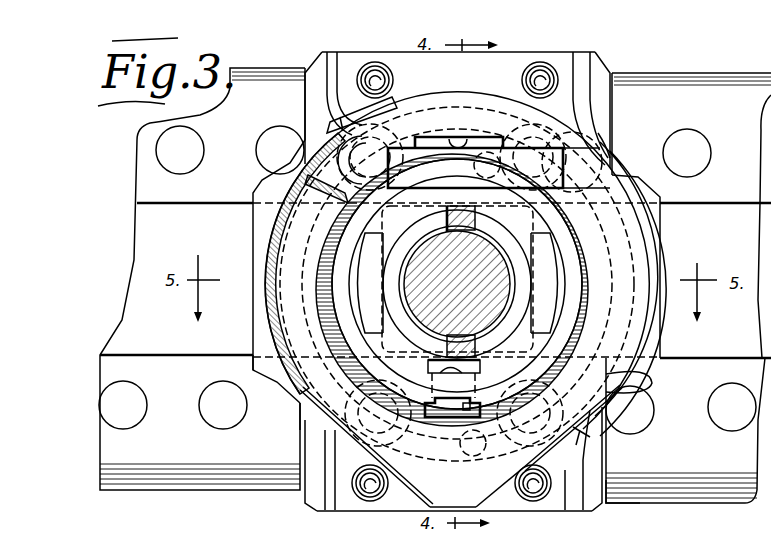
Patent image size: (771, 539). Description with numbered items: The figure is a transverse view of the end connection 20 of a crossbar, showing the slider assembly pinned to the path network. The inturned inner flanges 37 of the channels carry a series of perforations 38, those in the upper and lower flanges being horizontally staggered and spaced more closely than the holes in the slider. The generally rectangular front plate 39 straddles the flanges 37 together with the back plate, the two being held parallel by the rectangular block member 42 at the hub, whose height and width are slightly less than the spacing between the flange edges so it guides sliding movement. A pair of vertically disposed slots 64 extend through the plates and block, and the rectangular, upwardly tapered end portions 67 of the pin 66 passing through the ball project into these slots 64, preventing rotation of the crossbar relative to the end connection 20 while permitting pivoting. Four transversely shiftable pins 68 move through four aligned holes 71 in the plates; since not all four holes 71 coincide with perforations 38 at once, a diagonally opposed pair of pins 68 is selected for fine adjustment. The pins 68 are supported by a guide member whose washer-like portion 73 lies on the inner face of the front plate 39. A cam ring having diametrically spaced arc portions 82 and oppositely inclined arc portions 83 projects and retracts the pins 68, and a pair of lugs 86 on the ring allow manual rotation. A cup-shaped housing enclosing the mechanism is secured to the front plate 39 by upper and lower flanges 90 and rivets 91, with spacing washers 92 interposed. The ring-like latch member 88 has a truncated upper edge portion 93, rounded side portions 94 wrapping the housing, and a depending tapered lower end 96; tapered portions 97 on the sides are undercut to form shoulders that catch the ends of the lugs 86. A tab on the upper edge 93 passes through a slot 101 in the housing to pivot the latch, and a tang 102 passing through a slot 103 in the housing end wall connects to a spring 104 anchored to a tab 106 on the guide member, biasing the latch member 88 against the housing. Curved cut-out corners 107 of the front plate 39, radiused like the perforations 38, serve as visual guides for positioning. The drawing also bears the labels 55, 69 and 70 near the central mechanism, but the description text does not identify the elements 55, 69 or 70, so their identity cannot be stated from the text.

The end connection 20 is at (290, 410).
The inner flanges 37 is at (717, 353).
The perforations 38 is at (190, 158).
The front plate 39 is at (602, 504).
The block member 42 is at (336, 203).
The bottom boss edge 55 is at (499, 500).
The slots 64 is at (487, 347).
The pin 66 is at (482, 225).
The end portions 67 is at (447, 227).
The pins 68 is at (397, 127).
The key 69 is at (452, 213).
The small roller 70 is at (445, 304).
The holes 71 is at (488, 256).
The washer-like portion 73 is at (572, 240).
The arc portions 82 is at (277, 330).
The inclined arc portions 83 is at (447, 113).
The lugs 86 is at (343, 113).
The latch member 88 is at (267, 298).
The flanges 90 is at (506, 60).
The rivets 91 is at (372, 70).
The spacing washers 92 is at (650, 380).
The upper edge portion 93 is at (603, 128).
The side portions 94 is at (253, 368).
The lower end 96 is at (427, 483).
The tapered portions 97 is at (434, 520).
The slot 101 is at (472, 136).
The tang 102 is at (432, 395).
The slot 103 is at (463, 410).
The spring 104 is at (446, 401).
The tab 106 is at (480, 363).
The cut-out corners 107 is at (263, 167).